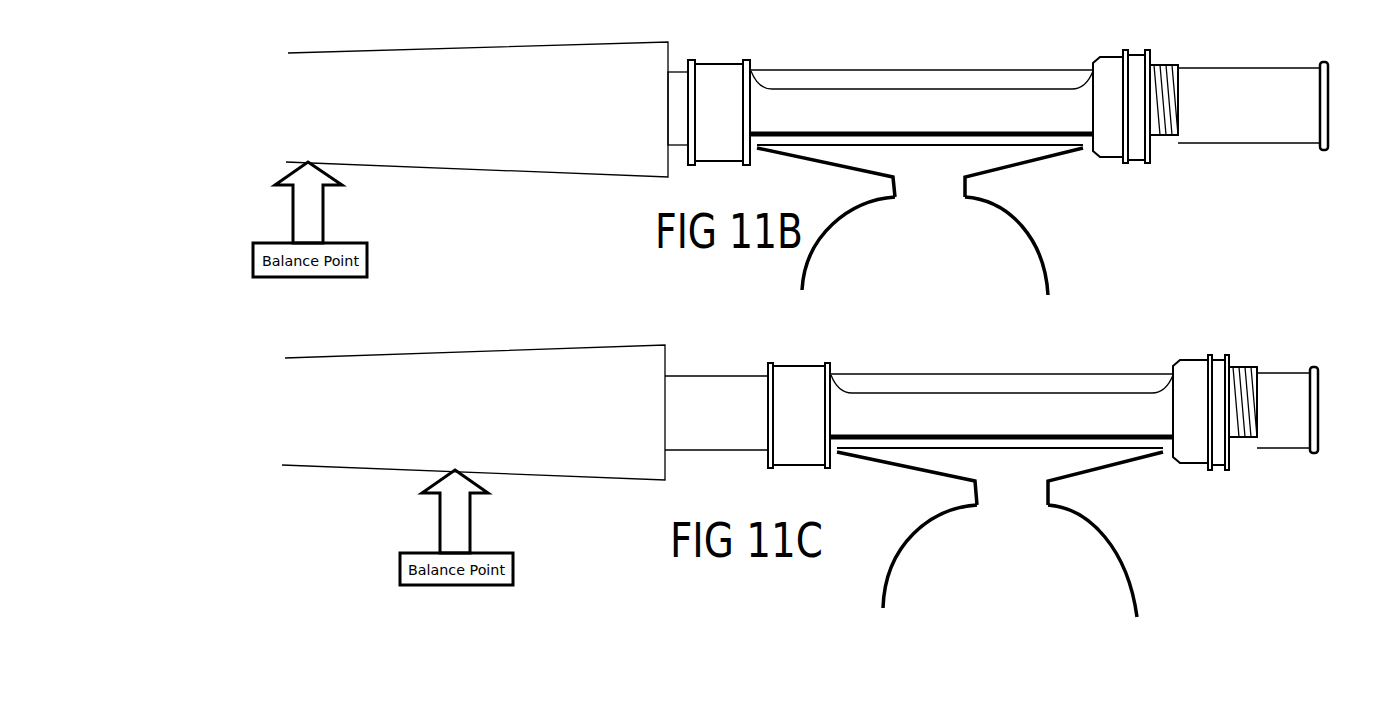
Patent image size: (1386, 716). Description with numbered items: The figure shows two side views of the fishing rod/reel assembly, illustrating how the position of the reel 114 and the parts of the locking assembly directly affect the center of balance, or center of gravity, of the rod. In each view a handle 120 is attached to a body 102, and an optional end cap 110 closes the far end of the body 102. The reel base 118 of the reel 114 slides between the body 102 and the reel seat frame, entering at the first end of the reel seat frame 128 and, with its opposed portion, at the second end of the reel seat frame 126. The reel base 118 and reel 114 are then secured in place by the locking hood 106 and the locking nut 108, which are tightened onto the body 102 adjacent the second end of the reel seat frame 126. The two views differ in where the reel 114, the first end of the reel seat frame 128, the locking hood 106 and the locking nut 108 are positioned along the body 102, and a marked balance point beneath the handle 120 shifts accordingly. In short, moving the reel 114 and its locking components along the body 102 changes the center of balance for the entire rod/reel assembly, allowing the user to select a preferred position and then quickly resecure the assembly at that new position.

In FIG. 11B, the body 102 is at (903, 70).
In FIG. 11C, the body 102 is at (680, 398).
In FIG. 11B, the locking hood 106 is at (1107, 125).
In FIG. 11C, the locking hood 106 is at (1188, 412).
In FIG. 11B, the locking nut 108 is at (1135, 48).
In FIG. 11C, the locking nut 108 is at (1214, 350).
In FIG. 11B, the end cap 110 is at (1320, 152).
In FIG. 11C, the end cap 110 is at (1312, 460).
In FIG. 11B, the reel 114 is at (967, 257).
In FIG. 11C, the reel 114 is at (1035, 578).
In FIG. 11B, the reel base 118 is at (1043, 163).
In FIG. 11C, the reel base 118 is at (917, 472).
In FIG. 11B, the handle 120 is at (560, 143).
In FIG. 11C, the handle 120 is at (385, 435).
In FIG. 11B, the second end of the reel seat frame 126 is at (1180, 62).
In FIG. 11C, the second end of the reel seat frame 126 is at (1257, 365).
In FIG. 11B, the first end of the reel seat frame 128 is at (705, 85).
In FIG. 11C, the first end of the reel seat frame 128 is at (787, 388).